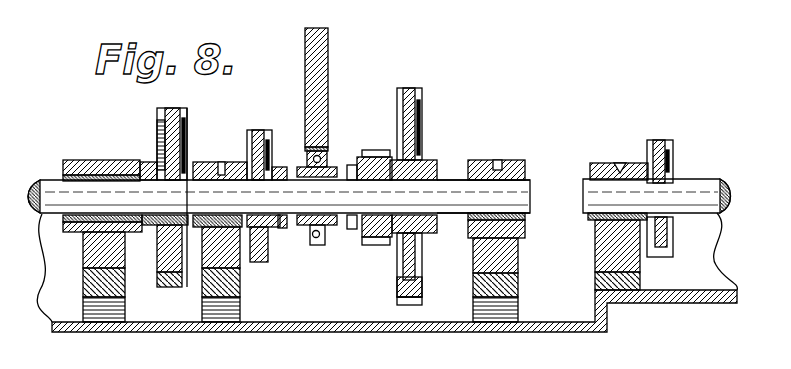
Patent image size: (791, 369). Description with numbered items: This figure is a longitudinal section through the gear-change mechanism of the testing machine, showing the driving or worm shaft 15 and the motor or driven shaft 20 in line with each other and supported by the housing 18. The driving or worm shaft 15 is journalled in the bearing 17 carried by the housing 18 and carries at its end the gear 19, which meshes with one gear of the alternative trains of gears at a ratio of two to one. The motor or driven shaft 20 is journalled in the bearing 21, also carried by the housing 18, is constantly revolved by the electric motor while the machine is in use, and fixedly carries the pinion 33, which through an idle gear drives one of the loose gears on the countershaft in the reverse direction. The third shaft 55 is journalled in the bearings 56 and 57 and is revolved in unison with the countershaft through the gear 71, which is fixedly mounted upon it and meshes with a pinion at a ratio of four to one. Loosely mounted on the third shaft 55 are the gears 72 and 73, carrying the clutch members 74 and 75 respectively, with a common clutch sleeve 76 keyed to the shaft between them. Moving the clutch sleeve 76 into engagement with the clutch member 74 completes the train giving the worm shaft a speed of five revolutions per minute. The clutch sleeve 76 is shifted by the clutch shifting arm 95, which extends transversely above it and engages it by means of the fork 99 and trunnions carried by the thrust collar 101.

The driving or worm shaft 15 is at (47, 193).
The bearing 17 is at (95, 169).
The housing 18 is at (578, 332).
The gear 19 is at (160, 125).
The motor or driven shaft 20 is at (700, 192).
The bearing 21 is at (607, 165).
The pinion 33 is at (672, 153).
The third shaft 55 is at (450, 180).
The bearing 56 is at (217, 157).
The bearing 57 is at (520, 151).
The gear 71 is at (400, 90).
The gear 72 is at (258, 136).
The gear 73 is at (378, 150).
The clutch member 74 is at (271, 118).
The clutch member 75 is at (367, 158).
The clutch sleeve 76 is at (352, 165).
The clutch shifting arm 95 is at (305, 40).
The fork 99 is at (305, 136).
The thrust collar 101 is at (313, 246).